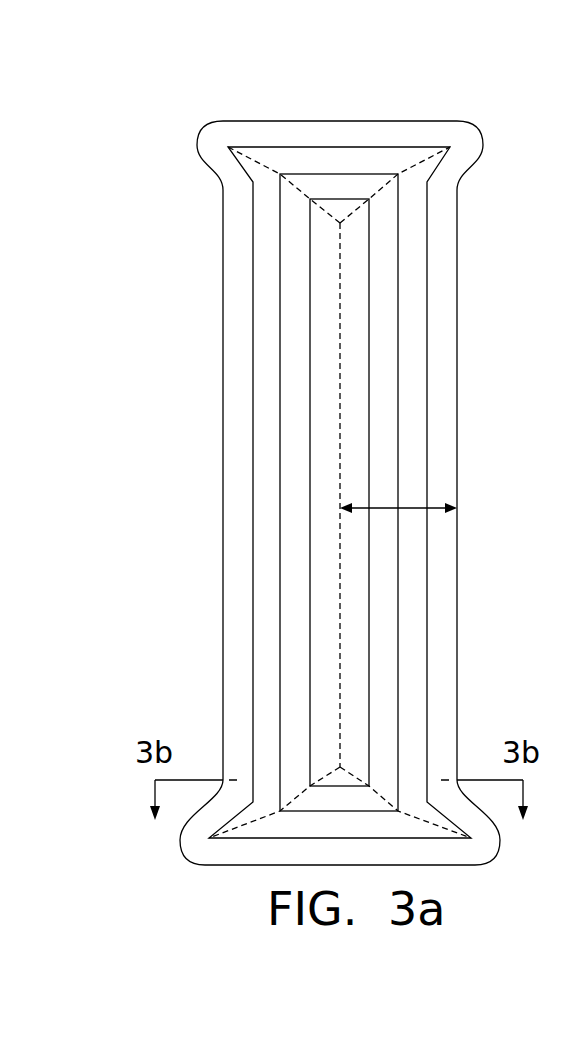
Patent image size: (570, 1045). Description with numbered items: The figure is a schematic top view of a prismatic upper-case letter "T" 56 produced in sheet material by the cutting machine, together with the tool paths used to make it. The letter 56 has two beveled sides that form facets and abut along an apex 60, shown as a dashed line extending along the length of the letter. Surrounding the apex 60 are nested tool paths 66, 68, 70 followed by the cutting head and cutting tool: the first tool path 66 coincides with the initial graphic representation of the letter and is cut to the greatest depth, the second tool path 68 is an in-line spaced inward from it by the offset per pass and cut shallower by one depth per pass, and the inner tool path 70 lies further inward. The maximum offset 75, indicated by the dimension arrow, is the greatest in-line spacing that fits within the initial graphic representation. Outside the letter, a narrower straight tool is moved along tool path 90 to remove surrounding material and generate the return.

The letter 56 is at (368, 102).
The apex 60 is at (336, 313).
The first tool path 66 is at (427, 278).
The second tool path 68 is at (398, 257).
The tool path 70 is at (369, 226).
The maximum offset 75 is at (405, 510).
The tool path 90 is at (457, 318).